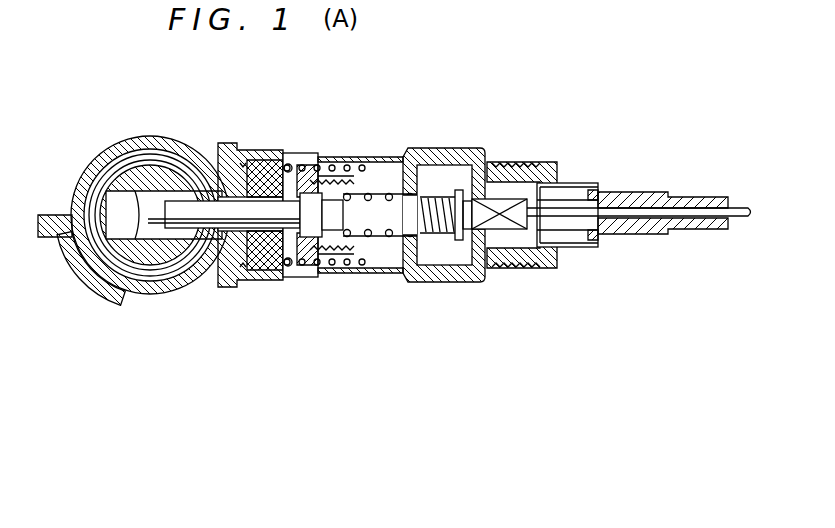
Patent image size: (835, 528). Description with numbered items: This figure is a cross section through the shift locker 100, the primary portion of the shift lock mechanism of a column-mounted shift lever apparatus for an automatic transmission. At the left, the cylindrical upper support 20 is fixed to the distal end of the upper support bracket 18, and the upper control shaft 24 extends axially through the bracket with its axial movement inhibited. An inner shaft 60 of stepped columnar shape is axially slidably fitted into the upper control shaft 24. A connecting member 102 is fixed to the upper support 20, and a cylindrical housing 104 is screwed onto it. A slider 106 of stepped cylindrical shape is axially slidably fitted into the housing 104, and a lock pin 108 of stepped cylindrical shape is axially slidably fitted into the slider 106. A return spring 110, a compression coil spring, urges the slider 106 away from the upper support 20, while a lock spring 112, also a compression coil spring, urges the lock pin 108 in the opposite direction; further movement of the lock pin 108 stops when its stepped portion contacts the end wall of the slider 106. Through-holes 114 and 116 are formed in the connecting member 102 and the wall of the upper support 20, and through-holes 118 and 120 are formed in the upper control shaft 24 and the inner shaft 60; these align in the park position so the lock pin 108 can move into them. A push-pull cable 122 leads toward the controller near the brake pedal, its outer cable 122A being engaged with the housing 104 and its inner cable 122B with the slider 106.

The upper support bracket 18 is at (57, 214).
The upper support 20 is at (148, 150).
The upper control shaft 24 is at (166, 152).
The inner shaft 60 is at (117, 141).
The shift locker 100 is at (498, 146).
The connecting member 102 is at (222, 148).
The housing 104 is at (297, 153).
The slider 106 is at (388, 157).
The lock pin 108 is at (283, 278).
The return spring 110 is at (340, 277).
The lock spring 112 is at (415, 277).
The through-hole 114 is at (253, 277).
The through-hole 116 is at (212, 278).
The through-hole 118 is at (167, 272).
The through-hole 120 is at (88, 268).
The push-pull cable 122 is at (679, 187).
The outer cable 122A is at (694, 192).
The inner cable 122B is at (737, 220).